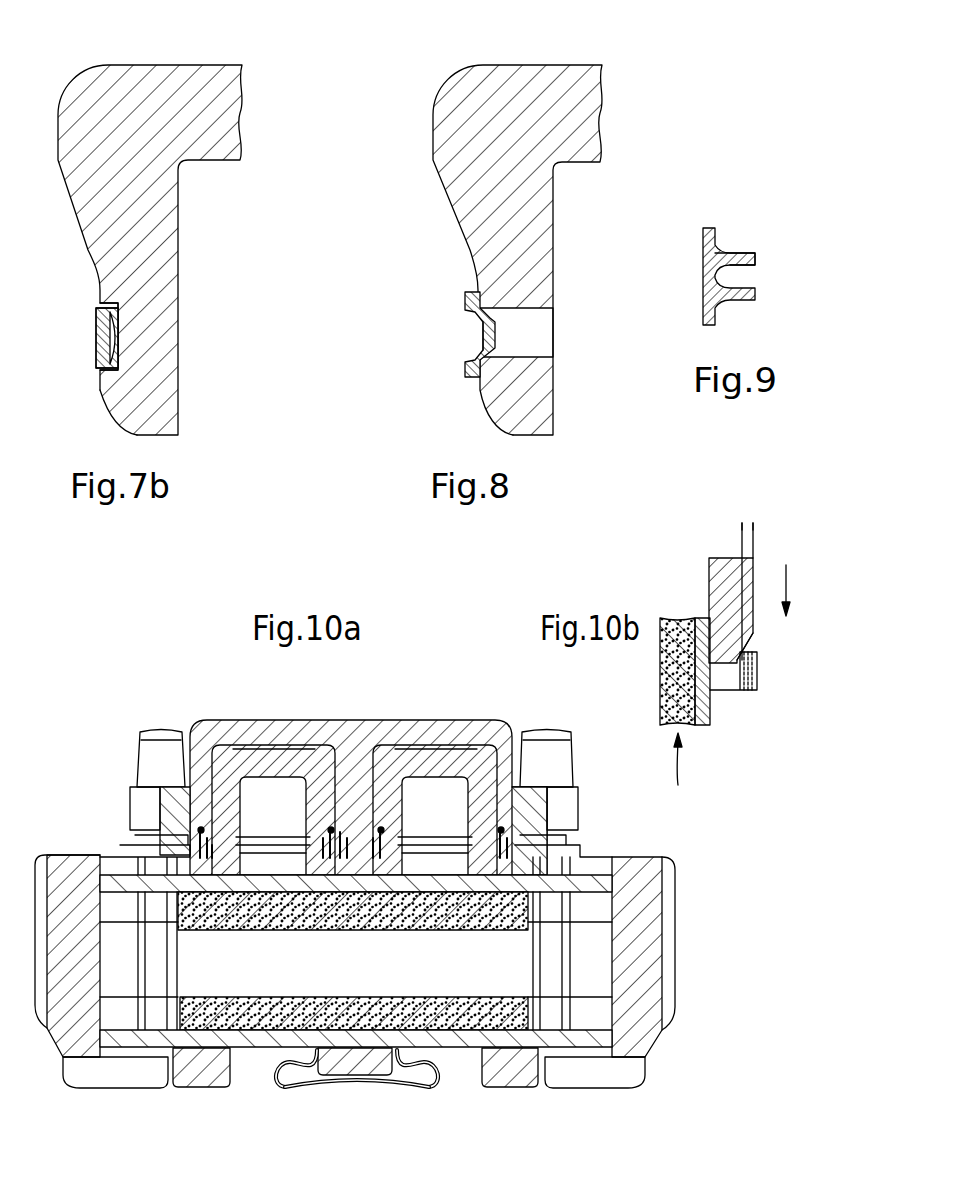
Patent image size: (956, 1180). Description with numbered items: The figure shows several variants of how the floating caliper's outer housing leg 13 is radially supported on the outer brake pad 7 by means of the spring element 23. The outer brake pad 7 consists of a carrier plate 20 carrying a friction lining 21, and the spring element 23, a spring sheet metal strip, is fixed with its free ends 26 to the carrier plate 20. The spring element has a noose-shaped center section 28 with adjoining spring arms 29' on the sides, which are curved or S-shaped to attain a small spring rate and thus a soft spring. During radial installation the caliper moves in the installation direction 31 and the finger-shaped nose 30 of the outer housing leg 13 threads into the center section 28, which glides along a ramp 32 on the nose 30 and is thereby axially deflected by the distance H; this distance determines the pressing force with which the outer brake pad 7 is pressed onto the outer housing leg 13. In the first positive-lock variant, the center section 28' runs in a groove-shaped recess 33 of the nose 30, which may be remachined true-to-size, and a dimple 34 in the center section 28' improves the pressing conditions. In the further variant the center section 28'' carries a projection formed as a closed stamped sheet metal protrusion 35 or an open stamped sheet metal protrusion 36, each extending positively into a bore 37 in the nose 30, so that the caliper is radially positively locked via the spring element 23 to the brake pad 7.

In FIG. 7B, the outer housing leg 13 is at (112, 100).
In FIG. 8, the outer housing leg 13 is at (527, 97).
In FIG. 7B, the finger-shaped nose 30 is at (152, 268).
In FIG. 8, the finger-shaped nose 30 is at (522, 270).
In FIG. 10A, the finger-shaped nose 30 is at (346, 1065).
In FIG. 10B, the finger-shaped nose 30 is at (717, 587).
In FIG. 7B, the noose-shaped center section 28' is at (77, 338).
In FIG. 7B, the dimple 34 is at (113, 337).
In FIG. 7B, the groove-shaped recess 33 is at (118, 363).
In FIG. 7B, the ramp 32 is at (110, 410).
In FIG. 8, the ramp 32 is at (487, 413).
In FIG. 10B, the ramp 32 is at (747, 647).
In FIG. 8, the noose-shaped center section 28'' is at (445, 315).
In FIG. 9, the noose-shaped center section 28'' is at (713, 252).
In FIG. 8, the closed stamped sheet metal protrusion 35 is at (483, 330).
In FIG. 8, the bore 37 is at (533, 323).
In FIG. 9, the open stamped sheet metal protrusion 36 is at (743, 252).
In FIG. 10B, the installation direction 31 is at (787, 585).
In FIG. 10A, the noose-shaped center section 28 is at (357, 1124).
In FIG. 10B, the noose-shaped center section 28 is at (780, 672).
In FIG. 10B, the spring element 23 is at (755, 673).
In FIG. 10B, the friction lining 21 is at (667, 687).
In FIG. 10B, the carrier plate 20 is at (705, 700).
In FIG. 10B, the outer brake pad 7 is at (677, 775).
In FIG. 10B, the distance H is at (707, 529).
In FIG. 10A, the spring arms 29' is at (365, 1109).
In FIG. 10A, the free ends 26 is at (465, 1050).